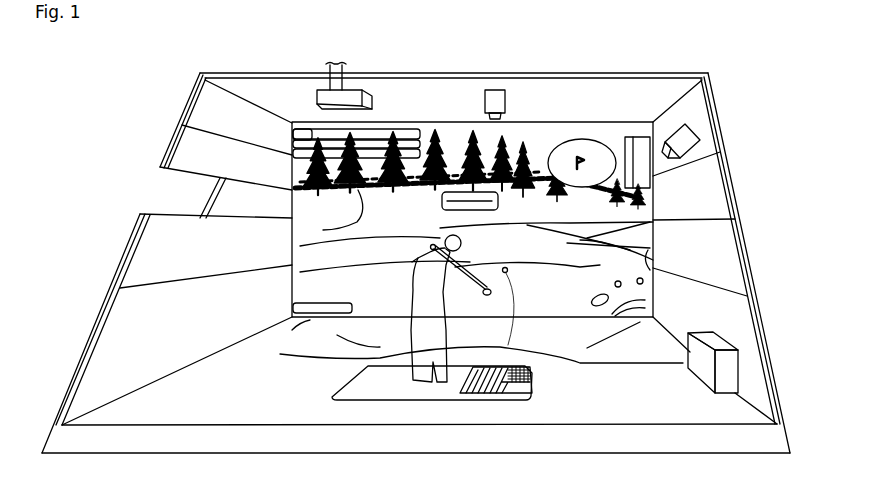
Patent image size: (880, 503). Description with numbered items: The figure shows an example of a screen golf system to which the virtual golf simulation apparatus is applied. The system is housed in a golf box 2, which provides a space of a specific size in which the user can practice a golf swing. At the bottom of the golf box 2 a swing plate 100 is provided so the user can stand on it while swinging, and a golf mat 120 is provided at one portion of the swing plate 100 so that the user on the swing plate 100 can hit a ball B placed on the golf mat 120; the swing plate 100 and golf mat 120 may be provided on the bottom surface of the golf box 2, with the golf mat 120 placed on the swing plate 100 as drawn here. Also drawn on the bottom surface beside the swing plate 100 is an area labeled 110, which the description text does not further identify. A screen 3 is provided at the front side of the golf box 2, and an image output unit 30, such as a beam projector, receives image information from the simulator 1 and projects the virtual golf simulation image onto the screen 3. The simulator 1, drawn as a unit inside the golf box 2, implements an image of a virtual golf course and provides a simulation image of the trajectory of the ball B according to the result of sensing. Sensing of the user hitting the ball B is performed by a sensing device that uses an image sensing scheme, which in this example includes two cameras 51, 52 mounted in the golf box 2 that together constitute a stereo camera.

The simulator 1 is at (718, 343).
The golf box 2 is at (160, 127).
The screen 3 is at (664, 202).
The image output unit 30 is at (356, 91).
The camera 51 is at (690, 136).
The camera 52 is at (493, 88).
The swing plate 100 is at (404, 405).
The floor mat 110 is at (377, 384).
The golf mat 120 is at (543, 381).
The ball B is at (509, 270).